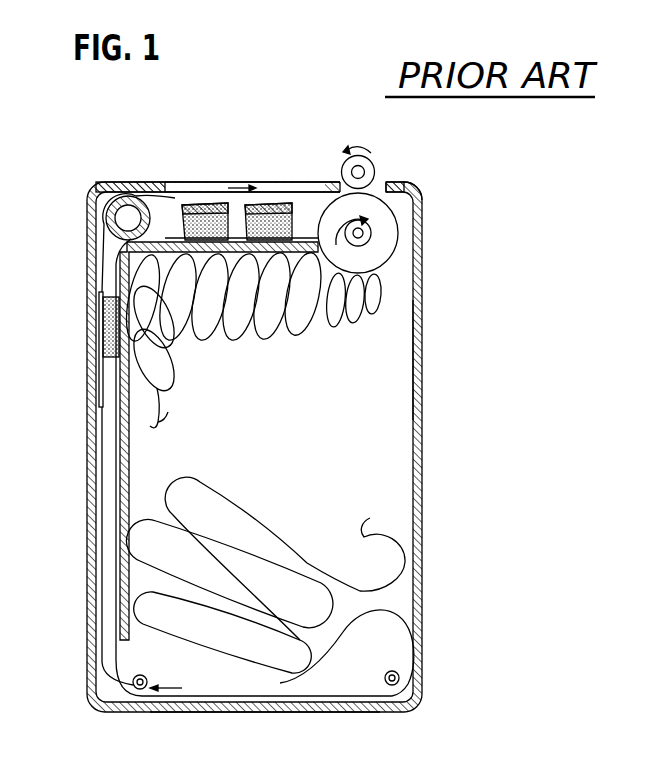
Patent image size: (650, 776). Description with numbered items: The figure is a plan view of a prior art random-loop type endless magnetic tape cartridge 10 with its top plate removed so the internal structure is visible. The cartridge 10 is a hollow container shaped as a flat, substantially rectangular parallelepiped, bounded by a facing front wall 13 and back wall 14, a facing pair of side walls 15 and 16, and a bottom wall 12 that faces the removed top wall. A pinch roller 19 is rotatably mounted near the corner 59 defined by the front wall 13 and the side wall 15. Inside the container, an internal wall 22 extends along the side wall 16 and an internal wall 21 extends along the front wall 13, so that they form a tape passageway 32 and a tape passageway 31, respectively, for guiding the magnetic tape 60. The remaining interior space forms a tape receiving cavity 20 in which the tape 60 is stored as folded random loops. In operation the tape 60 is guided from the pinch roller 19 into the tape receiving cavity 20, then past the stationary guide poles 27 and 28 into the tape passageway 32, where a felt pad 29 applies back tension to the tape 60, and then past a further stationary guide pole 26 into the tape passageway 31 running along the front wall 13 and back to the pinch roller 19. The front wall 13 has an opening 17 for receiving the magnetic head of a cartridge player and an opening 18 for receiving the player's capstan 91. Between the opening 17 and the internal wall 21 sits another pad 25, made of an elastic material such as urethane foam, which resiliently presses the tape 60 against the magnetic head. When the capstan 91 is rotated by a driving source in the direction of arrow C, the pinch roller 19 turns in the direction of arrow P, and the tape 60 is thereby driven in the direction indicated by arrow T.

The tape cartridge 10 is at (468, 472).
The bottom wall 12 is at (395, 338).
The front wall 13 is at (147, 182).
The back wall 14 is at (200, 712).
The side wall 15 is at (422, 372).
The side wall 16 is at (97, 408).
The opening 17 is at (285, 182).
The opening 18 is at (392, 182).
The pinch roller 19 is at (387, 234).
The tape receiving cavity 20 is at (318, 494).
The internal wall 21 is at (163, 208).
The internal wall 22 is at (112, 478).
The pad 25 is at (202, 218).
The stationary guide pole 26 is at (126, 214).
The stationary guide pole 27 is at (392, 686).
The stationary guide pole 28 is at (140, 690).
The felt pad 29 is at (97, 338).
The tape passageway 31 is at (163, 241).
The tape passageway 32 is at (112, 522).
The corner 59 is at (422, 191).
The magnetic tape 60 is at (272, 341).
The capstan 91 is at (370, 168).
The arrow indicating tape drive direction T is at (242, 187).
The arrow indicating capstan rotation direction C is at (348, 154).
The arrow indicating pinch roller rotation direction P is at (359, 223).